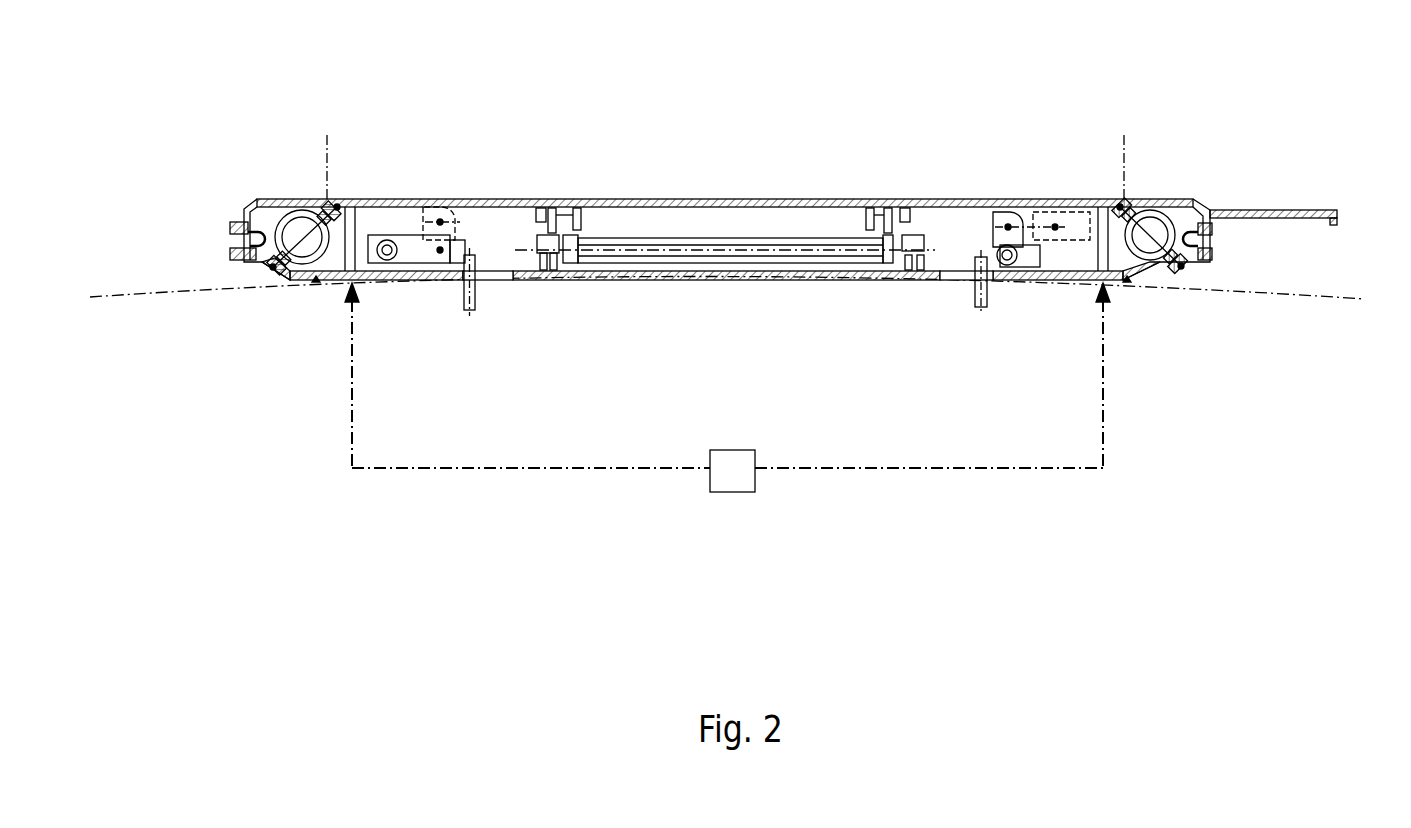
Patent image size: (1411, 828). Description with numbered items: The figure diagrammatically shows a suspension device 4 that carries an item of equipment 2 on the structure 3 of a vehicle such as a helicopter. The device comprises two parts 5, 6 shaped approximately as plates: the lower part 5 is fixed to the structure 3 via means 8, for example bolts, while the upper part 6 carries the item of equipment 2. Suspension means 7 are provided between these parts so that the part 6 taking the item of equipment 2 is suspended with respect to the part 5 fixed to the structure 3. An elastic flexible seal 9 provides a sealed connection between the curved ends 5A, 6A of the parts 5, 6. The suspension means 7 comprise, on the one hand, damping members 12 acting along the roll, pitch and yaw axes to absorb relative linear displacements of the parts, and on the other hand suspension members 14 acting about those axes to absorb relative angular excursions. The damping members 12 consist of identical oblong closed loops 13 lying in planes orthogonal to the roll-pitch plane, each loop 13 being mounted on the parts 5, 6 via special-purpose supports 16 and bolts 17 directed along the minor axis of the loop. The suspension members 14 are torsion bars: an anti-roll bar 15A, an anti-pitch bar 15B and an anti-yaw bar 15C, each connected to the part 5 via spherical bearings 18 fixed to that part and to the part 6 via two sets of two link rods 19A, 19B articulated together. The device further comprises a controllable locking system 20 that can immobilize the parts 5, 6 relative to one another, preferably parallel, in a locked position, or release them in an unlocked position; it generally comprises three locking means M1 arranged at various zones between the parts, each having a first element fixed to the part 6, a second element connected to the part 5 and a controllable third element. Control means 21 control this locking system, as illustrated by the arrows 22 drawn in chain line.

The item of equipment 2 is at (327, 140).
The structure 3 is at (183, 288).
The suspension device 4 is at (838, 93).
The part 5 is at (773, 280).
The curved end 5A is at (252, 284).
The part 6 is at (798, 199).
The curved end 6A is at (236, 210).
The suspension means 7 is at (953, 220).
The means 8 is at (480, 298).
The elastic flexible seal 9 is at (255, 240).
The damping members 12 is at (315, 282).
The closed loops 13 is at (257, 198).
The suspension members 14 is at (713, 283).
The anti-roll bar 15A is at (392, 232).
The anti-pitch bar 15B is at (735, 240).
The anti-yaw bar 15C is at (990, 200).
The special-purpose supports 16 is at (292, 198).
The bolts 17 is at (287, 281).
The spherical bearings 18 is at (407, 280).
The link rods 19A is at (420, 281).
The link rods 19B is at (482, 199).
The controllable locking system 20 is at (369, 303).
The control means 21 is at (737, 491).
The arrows 22 is at (475, 473).
The locking means M1 is at (350, 198).